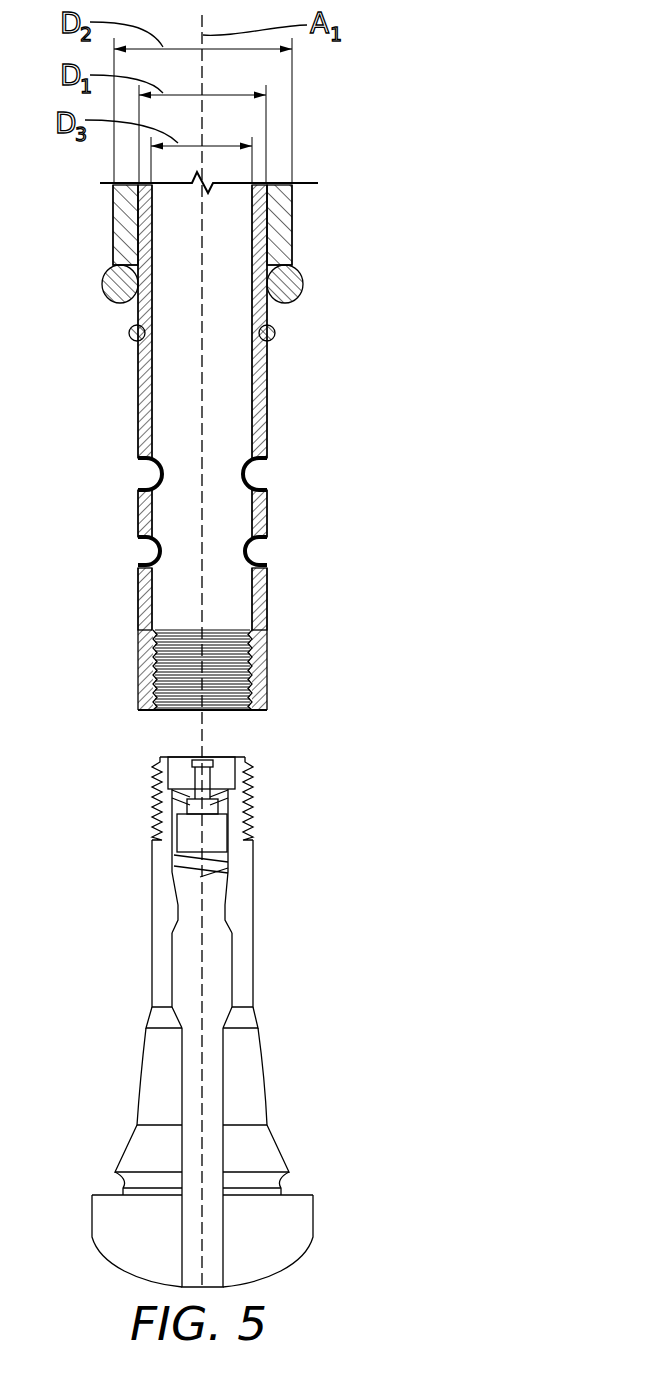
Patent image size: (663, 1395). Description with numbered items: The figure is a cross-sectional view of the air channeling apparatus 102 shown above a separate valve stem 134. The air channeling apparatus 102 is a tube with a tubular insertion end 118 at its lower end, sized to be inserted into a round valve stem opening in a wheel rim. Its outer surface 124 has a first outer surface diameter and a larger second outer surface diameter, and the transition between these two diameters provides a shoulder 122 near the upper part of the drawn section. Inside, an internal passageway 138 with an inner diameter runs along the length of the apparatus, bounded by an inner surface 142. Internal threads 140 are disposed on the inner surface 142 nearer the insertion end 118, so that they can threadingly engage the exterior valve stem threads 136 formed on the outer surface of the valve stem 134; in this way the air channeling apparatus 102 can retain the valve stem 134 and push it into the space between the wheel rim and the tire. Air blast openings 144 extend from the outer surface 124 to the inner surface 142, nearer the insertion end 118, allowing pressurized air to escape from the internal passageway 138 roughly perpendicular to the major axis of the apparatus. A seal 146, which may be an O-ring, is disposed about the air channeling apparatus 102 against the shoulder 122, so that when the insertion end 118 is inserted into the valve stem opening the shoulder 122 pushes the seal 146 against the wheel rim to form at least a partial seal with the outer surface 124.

The air channeling apparatus 102 is at (110, 407).
The insertion end 118 is at (118, 698).
The shoulder 122 is at (280, 258).
The outer surface 124 is at (267, 432).
The valve stem 134 is at (262, 1052).
The exterior valve stem threads 136 is at (253, 803).
The internal passageway 138 is at (168, 418).
The internal threads 140 is at (225, 630).
The inner surface 142 is at (257, 380).
The air blast opening 144 is at (266, 479).
The seal 146 is at (272, 332).